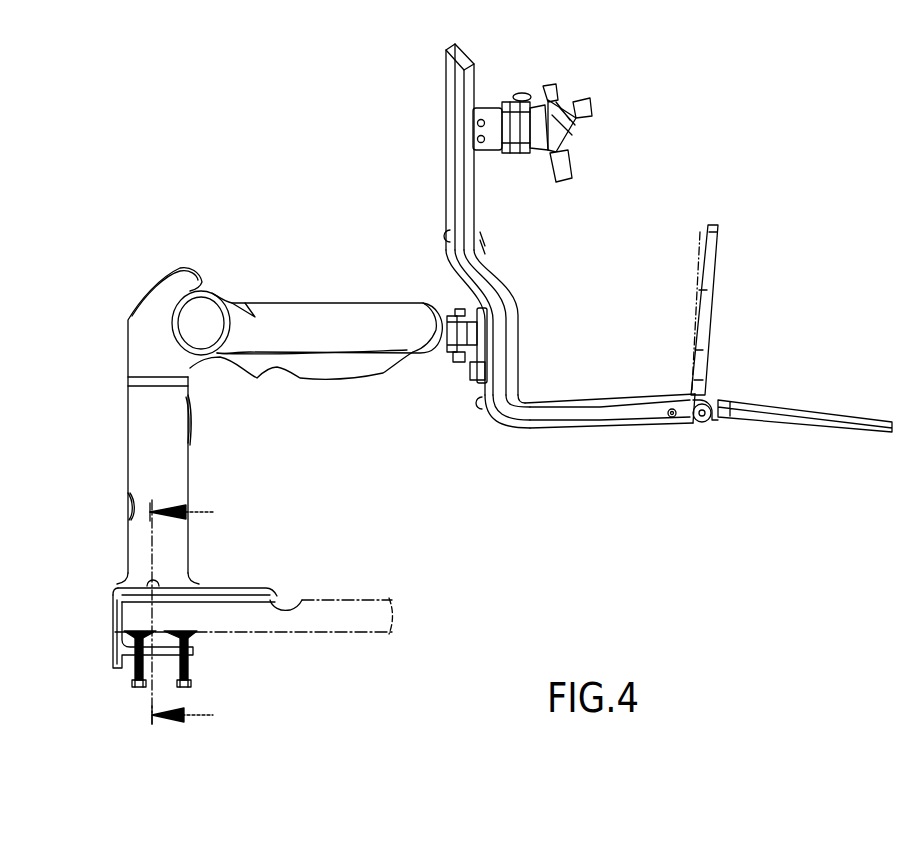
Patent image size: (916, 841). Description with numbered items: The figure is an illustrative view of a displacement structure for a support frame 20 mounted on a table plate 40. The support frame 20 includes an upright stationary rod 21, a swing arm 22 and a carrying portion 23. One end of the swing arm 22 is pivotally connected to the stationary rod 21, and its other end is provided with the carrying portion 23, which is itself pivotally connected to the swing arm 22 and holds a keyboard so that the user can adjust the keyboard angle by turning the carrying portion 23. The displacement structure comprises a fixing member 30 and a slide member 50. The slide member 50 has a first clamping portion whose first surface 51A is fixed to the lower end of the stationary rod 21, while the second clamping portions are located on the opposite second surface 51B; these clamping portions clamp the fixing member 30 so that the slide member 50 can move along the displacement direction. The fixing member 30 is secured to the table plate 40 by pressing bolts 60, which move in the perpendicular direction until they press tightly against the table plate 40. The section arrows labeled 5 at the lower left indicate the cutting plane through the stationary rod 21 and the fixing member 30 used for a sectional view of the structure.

The support frame 20 is at (173, 163).
The stationary rod 21 is at (132, 410).
The swing arm 22 is at (340, 316).
The carrying portion 23 is at (700, 290).
The fixing member 30 is at (113, 616).
The table plate 40 is at (355, 622).
The slide member 50 is at (234, 588).
The first surface 51A is at (255, 587).
The second surface 51B is at (300, 600).
The pressing bolts 60 is at (190, 667).
The section line 5 is at (182, 604).